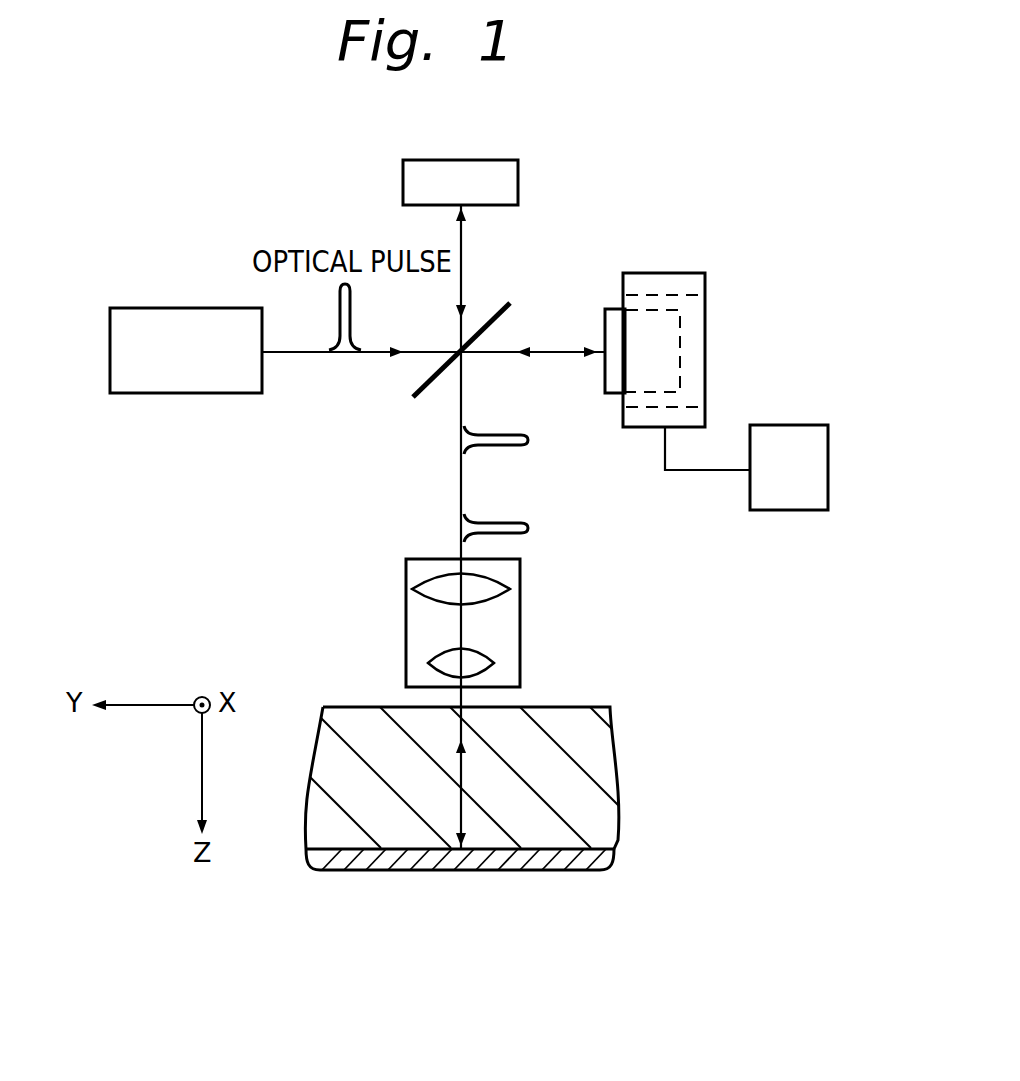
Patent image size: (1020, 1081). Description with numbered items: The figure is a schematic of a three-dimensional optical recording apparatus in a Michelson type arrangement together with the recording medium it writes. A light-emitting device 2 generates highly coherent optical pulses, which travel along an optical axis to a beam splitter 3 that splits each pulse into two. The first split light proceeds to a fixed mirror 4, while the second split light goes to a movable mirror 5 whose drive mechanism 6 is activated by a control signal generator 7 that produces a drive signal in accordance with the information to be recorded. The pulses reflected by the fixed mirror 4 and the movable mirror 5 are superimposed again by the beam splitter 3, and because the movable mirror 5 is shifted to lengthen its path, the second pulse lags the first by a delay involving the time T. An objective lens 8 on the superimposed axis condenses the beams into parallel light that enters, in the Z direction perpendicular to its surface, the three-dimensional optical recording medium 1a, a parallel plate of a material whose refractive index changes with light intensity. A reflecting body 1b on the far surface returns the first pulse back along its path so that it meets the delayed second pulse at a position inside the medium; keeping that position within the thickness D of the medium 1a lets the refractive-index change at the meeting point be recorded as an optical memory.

The three-dimensional optical recording medium 1a is at (618, 768).
The reflecting body 1b is at (563, 871).
The light-emitting device 2 is at (189, 308).
The beam splitter 3 is at (496, 328).
The fixed mirror 4 is at (488, 160).
The movable mirror 5 is at (604, 370).
The drive mechanism 6 is at (678, 273).
The control signal generator 7 is at (778, 510).
The objective lens 8 is at (520, 617).
The thickness D is at (397, 846).
The time T is at (544, 436).